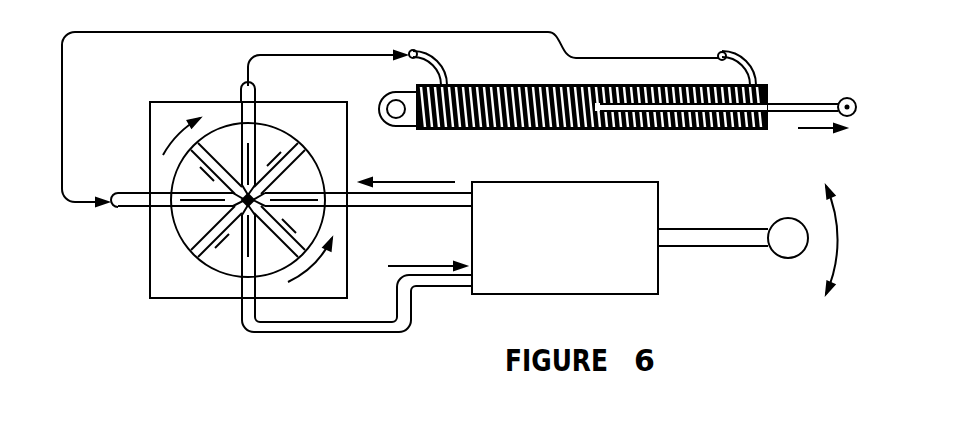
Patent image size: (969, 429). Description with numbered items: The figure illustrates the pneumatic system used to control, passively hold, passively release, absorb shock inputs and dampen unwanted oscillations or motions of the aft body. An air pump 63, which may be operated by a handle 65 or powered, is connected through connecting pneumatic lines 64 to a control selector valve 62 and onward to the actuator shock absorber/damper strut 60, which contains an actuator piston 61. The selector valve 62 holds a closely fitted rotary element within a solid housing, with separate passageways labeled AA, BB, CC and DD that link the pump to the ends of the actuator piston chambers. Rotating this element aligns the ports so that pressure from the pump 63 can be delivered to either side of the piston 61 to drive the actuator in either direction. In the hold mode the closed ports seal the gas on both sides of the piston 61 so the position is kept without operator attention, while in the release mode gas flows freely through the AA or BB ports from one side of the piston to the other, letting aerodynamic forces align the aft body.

The actuator shock absorber/damper strut 60 is at (540, 85).
The actuator piston 61 is at (812, 102).
The control selector valve 62 is at (248, 200).
The air pump 63 is at (565, 238).
The connecting pneumatic lines 64 is at (242, 70).
The handle 65 is at (787, 258).